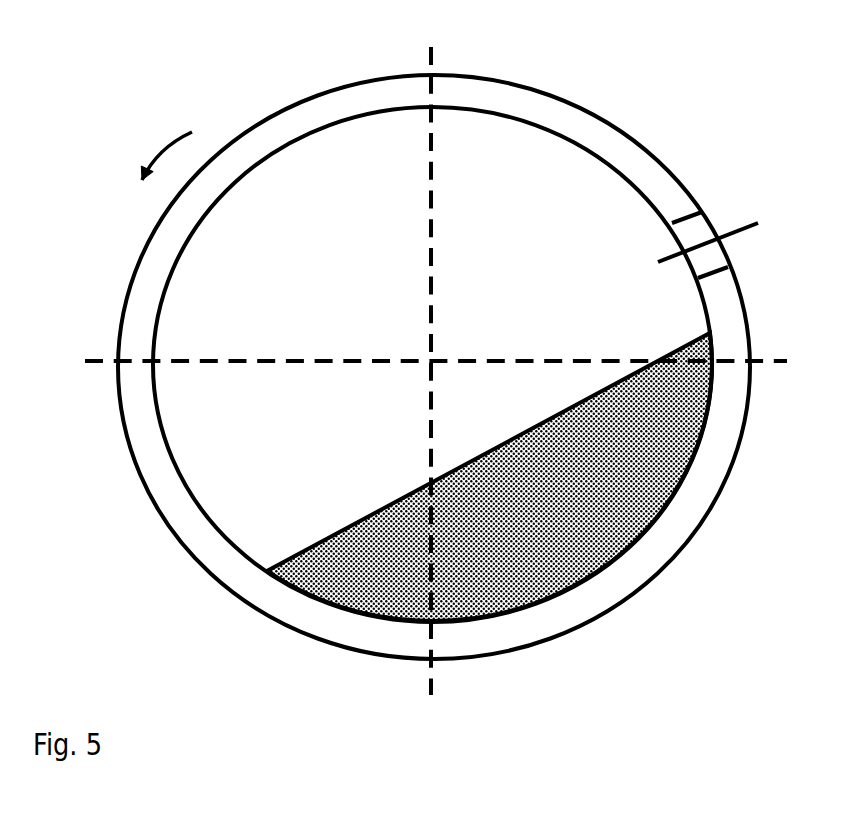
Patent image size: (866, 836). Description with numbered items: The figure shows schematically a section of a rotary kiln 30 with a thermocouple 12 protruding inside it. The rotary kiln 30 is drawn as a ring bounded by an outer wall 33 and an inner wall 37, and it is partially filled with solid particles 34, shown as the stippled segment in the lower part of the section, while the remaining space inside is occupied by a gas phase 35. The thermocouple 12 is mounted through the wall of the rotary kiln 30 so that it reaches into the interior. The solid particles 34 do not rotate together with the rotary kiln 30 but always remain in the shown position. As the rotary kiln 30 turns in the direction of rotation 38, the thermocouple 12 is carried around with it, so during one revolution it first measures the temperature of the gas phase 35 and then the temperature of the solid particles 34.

The rotary kiln 30 is at (461, 355).
The outer wall of drum 33 is at (733, 463).
The inner wall of drum 37 is at (603, 593).
The solid particles 34 is at (489, 477).
The gas phase 35 is at (431, 338).
The thermocouple 12 is at (743, 232).
The direction of rotation 38 is at (163, 153).